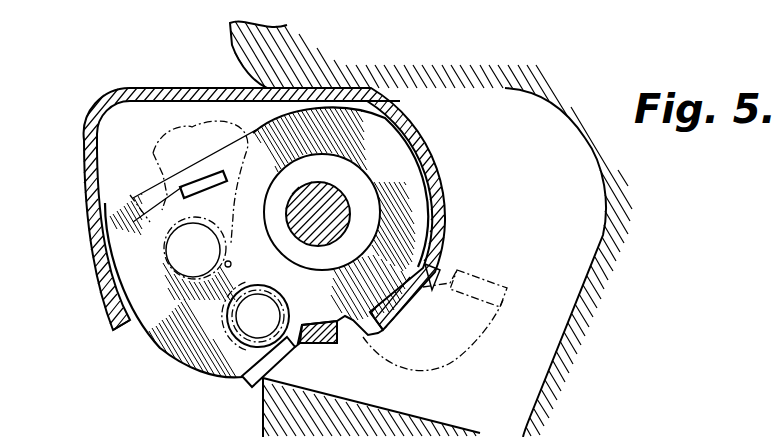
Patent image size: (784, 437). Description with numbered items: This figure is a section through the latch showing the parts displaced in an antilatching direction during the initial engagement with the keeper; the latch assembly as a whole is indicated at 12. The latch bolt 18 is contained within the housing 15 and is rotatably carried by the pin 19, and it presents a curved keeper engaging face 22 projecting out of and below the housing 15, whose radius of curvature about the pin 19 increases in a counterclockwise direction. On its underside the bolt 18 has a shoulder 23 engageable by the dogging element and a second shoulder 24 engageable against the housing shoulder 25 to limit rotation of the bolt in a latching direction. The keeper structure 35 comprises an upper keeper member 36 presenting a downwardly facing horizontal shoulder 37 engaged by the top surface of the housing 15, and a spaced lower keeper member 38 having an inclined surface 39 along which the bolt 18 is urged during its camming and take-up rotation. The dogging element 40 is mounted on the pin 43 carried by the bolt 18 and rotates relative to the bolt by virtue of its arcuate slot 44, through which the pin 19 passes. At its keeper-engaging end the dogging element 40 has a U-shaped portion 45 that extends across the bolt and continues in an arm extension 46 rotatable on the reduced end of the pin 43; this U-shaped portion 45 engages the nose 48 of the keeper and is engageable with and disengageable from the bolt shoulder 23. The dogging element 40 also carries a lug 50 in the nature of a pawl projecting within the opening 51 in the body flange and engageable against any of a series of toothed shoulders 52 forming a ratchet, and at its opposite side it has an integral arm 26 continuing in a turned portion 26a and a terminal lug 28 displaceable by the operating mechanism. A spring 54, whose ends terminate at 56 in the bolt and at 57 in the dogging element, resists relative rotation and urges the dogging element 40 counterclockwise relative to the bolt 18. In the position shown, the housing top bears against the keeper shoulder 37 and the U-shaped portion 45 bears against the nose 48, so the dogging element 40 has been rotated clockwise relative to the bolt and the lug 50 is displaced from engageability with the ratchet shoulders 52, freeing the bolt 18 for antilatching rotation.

The latch assembly 12 is at (167, 410).
The housing 15 is at (180, 87).
The latch bolt 18 is at (403, 172).
The pin 19 is at (288, 208).
The keeper engaging face 22 is at (132, 336).
The shoulder 23 is at (297, 344).
The second shoulder 24 is at (353, 332).
The housing shoulder 25 is at (430, 277).
The arm 26 is at (391, 314).
The turned portion 26a is at (468, 336).
The terminal lug 28 is at (500, 280).
The keeper structure 35 is at (527, 72).
The upper keeper member 36 is at (308, 55).
The horizontal shoulder 37 is at (440, 89).
The lower keeper member 38 is at (369, 410).
The inclined surface 39 is at (400, 410).
The dogging element 40 is at (223, 248).
The pin 43 is at (262, 312).
The arcuate slot 44 is at (350, 226).
The U-shaped portion 45 is at (245, 381).
The arm extension 46 is at (207, 367).
The nose 48 is at (262, 386).
The lug 50 is at (150, 177).
The opening 51 is at (212, 140).
The toothed shoulders 52 is at (161, 231).
The spring 54 is at (213, 222).
The spring end 56 is at (232, 266).
The spring end 57 is at (167, 342).